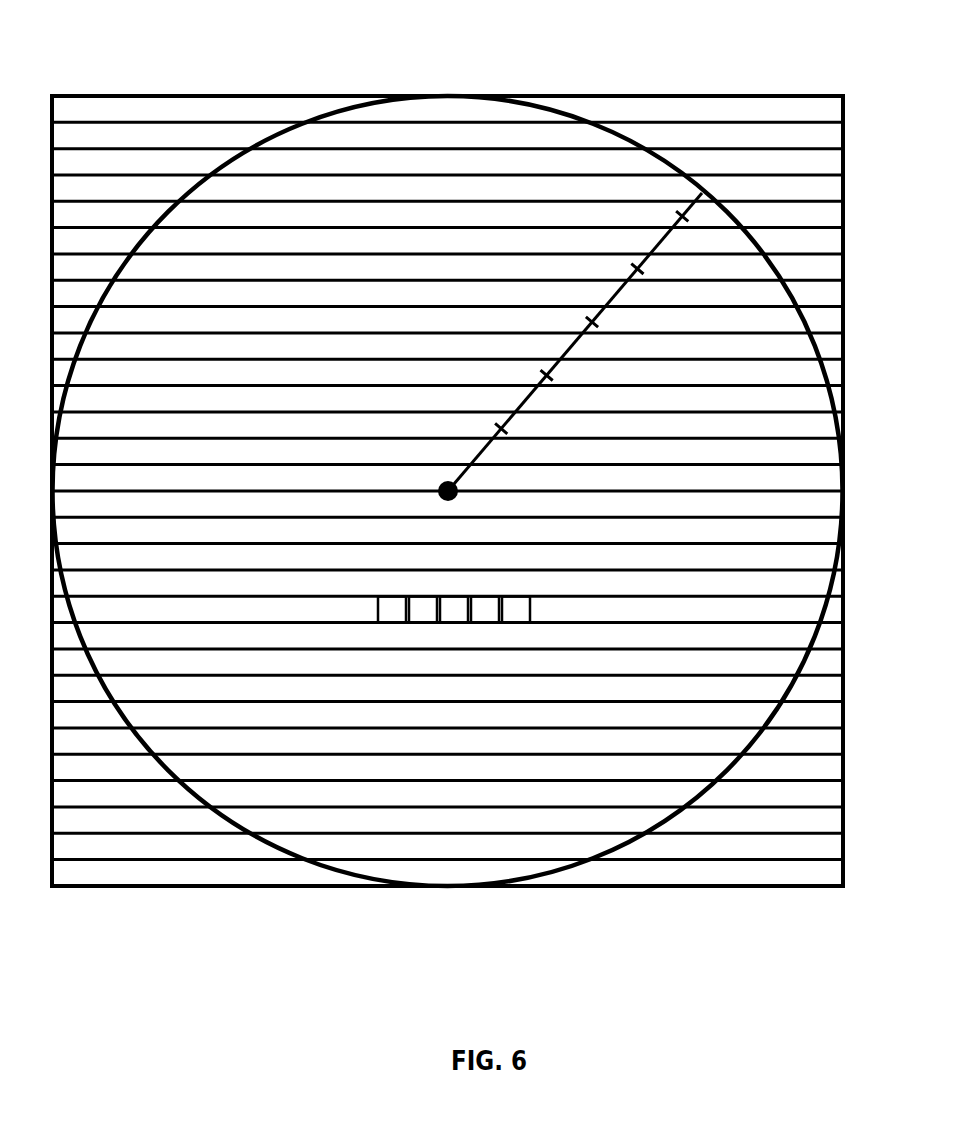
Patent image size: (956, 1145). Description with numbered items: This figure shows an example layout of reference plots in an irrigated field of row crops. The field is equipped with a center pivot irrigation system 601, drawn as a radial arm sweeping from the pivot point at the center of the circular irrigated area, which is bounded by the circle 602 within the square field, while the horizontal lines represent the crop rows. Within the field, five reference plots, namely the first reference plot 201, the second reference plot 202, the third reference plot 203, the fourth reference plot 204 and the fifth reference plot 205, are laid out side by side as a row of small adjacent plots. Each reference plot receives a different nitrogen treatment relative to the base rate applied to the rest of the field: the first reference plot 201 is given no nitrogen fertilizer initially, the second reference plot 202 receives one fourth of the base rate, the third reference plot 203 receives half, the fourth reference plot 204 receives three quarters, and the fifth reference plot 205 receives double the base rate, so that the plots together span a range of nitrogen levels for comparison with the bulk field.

The center pivot irrigation system 601 is at (612, 295).
The circular scan field boundary 602 is at (522, 138).
The reference plot R1 201 is at (388, 624).
The reference plot R2 202 is at (419, 624).
The reference plot R3 203 is at (450, 624).
The reference plot R4 204 is at (481, 624).
The reference plot R5 205 is at (511, 624).